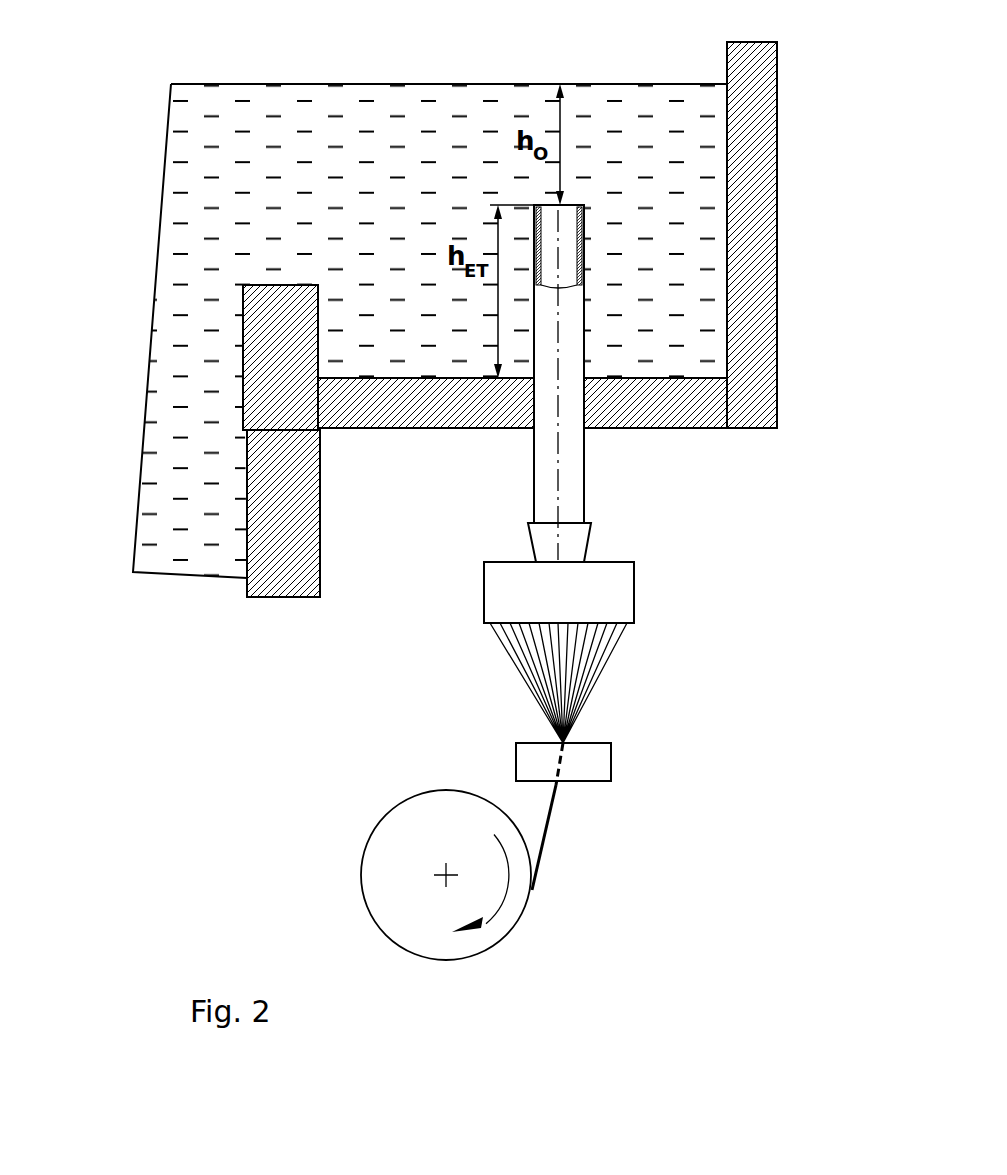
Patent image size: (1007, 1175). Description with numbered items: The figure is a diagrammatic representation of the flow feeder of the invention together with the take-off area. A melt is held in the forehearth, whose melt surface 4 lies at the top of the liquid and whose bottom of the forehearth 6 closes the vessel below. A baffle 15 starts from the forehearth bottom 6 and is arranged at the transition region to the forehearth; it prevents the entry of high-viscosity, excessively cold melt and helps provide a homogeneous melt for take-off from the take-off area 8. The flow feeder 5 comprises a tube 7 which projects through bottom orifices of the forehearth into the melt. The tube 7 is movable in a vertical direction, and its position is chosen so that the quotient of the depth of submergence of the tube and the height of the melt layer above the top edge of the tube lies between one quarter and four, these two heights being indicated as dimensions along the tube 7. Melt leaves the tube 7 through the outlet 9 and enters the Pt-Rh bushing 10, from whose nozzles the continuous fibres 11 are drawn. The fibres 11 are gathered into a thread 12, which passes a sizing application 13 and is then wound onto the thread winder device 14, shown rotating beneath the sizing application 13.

The melt surface 4 is at (362, 84).
The flow feeder 5 is at (752, 235).
The bottom of the forehearth 6 is at (634, 400).
The tube 7 is at (568, 318).
The take-off area 8 is at (590, 245).
The outlet 9 is at (552, 523).
The bushing 10 is at (600, 593).
The fibre (filament) 11 is at (518, 668).
The thread 12 is at (553, 810).
The sizing application 13 is at (595, 762).
The thread winder device 14 is at (412, 840).
The baffle 15 is at (265, 335).